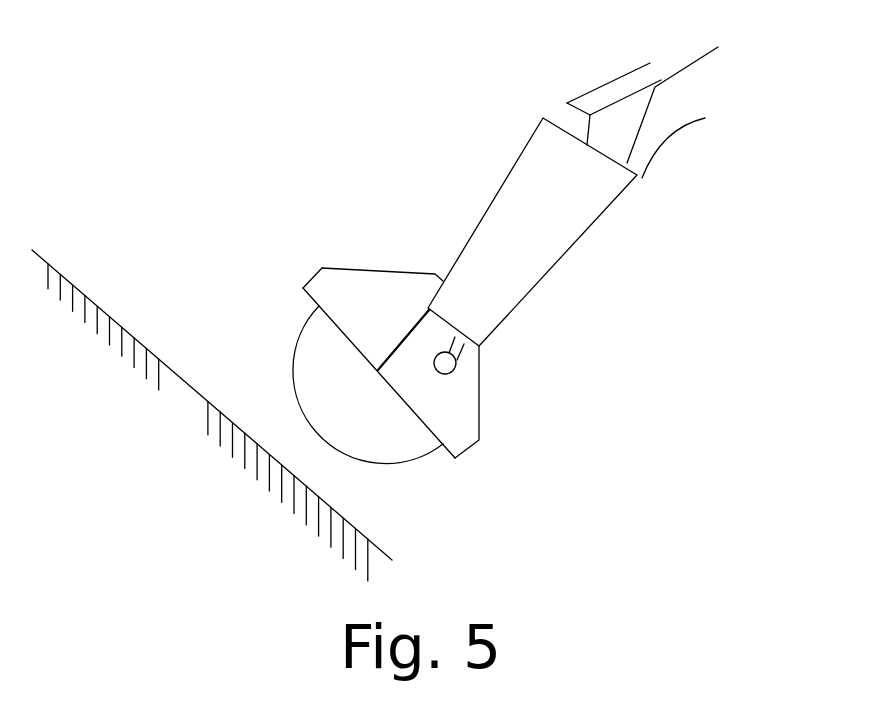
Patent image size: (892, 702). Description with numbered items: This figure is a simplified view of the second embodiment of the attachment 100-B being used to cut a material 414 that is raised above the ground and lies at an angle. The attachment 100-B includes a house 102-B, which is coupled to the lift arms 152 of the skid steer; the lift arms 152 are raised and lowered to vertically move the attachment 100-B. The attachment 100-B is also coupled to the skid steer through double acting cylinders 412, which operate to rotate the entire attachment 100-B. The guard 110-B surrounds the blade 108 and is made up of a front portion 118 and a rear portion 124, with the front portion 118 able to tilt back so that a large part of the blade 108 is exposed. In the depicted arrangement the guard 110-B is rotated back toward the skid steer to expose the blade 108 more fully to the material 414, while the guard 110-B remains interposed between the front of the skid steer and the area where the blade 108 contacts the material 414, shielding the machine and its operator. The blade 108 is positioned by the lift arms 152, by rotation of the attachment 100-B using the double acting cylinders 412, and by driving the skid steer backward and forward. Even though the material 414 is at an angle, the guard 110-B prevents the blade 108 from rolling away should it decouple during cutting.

The attachment 100-B is at (372, 109).
The house 102-B is at (580, 237).
The blade 108 is at (291, 355).
The guard 110-B is at (386, 271).
The front portion 118 is at (309, 284).
The rear portion 124 is at (479, 400).
The lift arms 152 is at (687, 128).
The double acting cylinders 412 is at (608, 85).
The material 414 is at (193, 389).